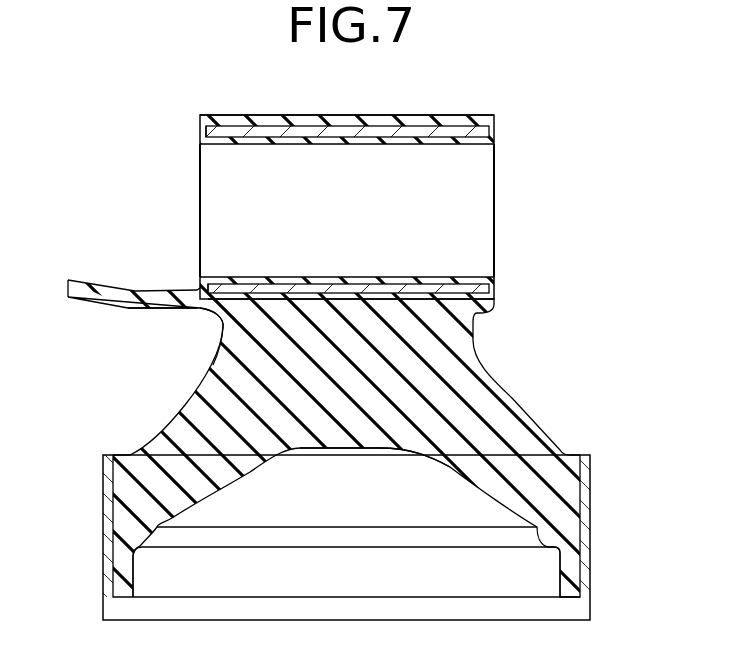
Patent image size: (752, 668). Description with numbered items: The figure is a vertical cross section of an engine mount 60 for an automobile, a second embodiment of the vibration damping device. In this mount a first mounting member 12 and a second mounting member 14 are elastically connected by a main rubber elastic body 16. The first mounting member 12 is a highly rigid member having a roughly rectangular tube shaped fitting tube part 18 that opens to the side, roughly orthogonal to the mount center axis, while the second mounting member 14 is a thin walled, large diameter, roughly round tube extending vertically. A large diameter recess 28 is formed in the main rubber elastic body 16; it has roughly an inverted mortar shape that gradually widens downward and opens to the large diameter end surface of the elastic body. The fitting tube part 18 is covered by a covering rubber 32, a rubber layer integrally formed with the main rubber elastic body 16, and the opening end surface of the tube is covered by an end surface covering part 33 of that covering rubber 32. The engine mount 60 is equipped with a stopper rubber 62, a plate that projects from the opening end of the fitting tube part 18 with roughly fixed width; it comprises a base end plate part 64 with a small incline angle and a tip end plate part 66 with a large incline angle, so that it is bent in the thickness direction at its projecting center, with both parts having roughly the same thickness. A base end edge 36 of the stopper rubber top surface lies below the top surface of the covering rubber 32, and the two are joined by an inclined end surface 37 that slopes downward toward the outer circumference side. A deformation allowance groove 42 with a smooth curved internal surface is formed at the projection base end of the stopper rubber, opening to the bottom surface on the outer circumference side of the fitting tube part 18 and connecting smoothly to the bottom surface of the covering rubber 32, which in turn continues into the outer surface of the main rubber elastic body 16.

The first mounting member 12 is at (424, 120).
The second mounting member 14 is at (598, 585).
The main rubber elastic body 16 is at (512, 395).
The fitting tube part 18 is at (245, 129).
The large diameter recess 28 is at (283, 458).
The covering rubber 32 is at (348, 116).
The end surface covering part 33 is at (203, 131).
The base end edge 36 is at (187, 287).
The inclined end surface 37 is at (195, 286).
The deformation allowance groove 42 is at (207, 309).
The engine mount 60 is at (590, 302).
The stopper rubber 62 is at (112, 285).
The base end plate part 64 is at (166, 300).
The tip end plate part 66 is at (88, 294).